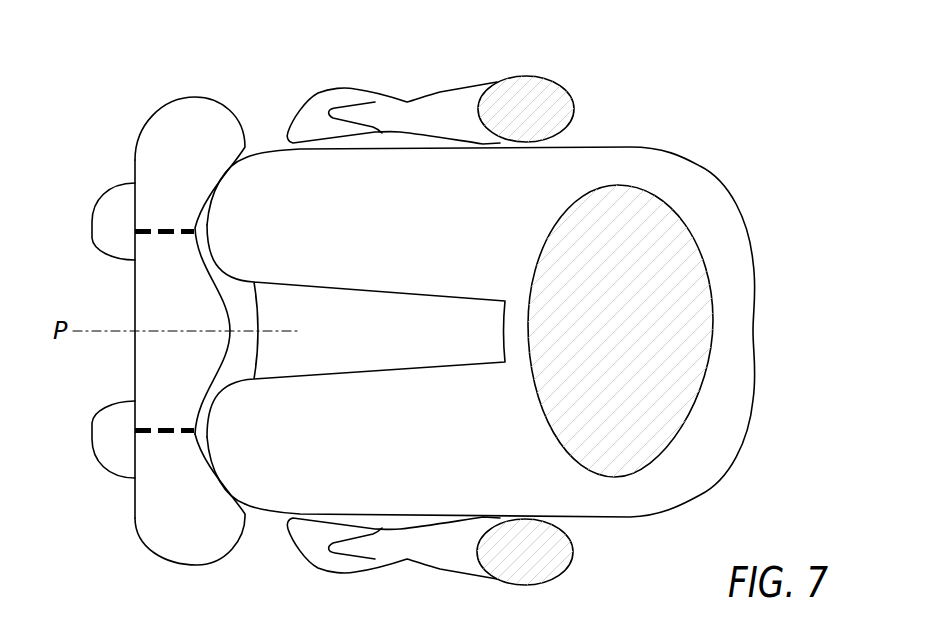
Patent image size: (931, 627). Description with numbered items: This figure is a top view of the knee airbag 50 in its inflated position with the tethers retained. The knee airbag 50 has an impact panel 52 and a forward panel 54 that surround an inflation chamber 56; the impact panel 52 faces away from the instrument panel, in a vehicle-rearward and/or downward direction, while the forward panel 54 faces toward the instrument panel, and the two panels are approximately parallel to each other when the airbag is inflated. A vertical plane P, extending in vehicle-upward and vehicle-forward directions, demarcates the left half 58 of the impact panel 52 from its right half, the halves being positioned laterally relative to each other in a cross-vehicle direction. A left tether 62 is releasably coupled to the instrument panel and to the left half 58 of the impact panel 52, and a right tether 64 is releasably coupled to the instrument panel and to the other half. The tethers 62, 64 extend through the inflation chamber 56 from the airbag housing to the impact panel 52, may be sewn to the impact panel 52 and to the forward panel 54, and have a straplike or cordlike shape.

The knee airbag 50 is at (190, 95).
The impact panel 52 is at (258, 303).
The forward panel 54 is at (135, 302).
The inflation chamber 56 is at (188, 532).
The left half 58 is at (247, 507).
The left tether 62 is at (167, 433).
The right tether 64 is at (165, 229).